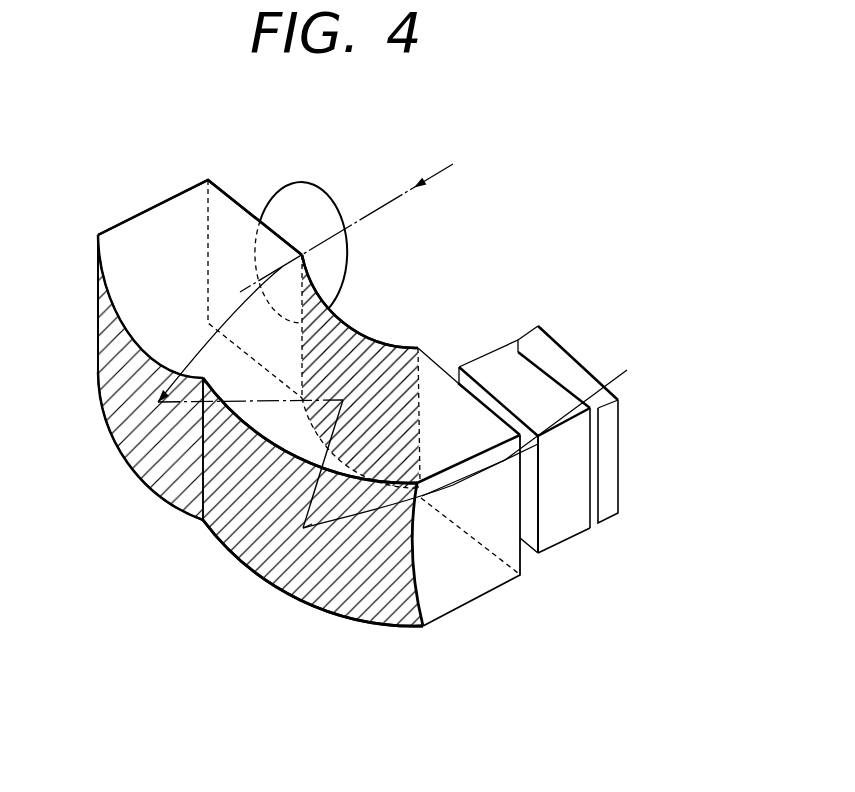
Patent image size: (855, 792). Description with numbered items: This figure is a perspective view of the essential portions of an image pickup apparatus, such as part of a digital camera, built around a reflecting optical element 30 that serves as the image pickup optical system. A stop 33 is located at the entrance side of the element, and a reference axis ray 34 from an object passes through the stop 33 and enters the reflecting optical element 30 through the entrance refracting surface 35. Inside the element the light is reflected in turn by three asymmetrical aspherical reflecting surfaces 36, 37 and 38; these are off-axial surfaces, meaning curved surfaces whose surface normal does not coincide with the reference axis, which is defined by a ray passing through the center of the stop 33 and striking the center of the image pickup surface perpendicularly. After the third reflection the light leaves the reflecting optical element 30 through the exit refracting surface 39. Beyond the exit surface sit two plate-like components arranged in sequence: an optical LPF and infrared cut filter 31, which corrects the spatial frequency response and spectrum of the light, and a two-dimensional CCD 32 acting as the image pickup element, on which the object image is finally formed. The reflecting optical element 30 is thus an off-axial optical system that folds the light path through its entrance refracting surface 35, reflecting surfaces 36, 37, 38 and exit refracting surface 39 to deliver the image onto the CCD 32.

The reflecting optical element 30 is at (455, 623).
The optical LPF and infrared cut filter 31 is at (570, 540).
The two-dimensional CCD 32 is at (612, 523).
The stop 33 is at (312, 183).
The reference axis ray 34 is at (453, 164).
The entrance refracting surface 35 is at (227, 222).
The asymmetrical aspherical reflecting surface 36 is at (115, 420).
The asymmetrical aspherical reflecting surface 37 is at (384, 346).
The asymmetrical aspherical reflecting surface 38 is at (290, 582).
The exit refracting surface 39 is at (432, 390).